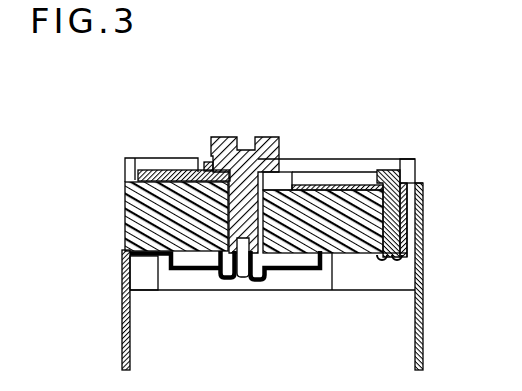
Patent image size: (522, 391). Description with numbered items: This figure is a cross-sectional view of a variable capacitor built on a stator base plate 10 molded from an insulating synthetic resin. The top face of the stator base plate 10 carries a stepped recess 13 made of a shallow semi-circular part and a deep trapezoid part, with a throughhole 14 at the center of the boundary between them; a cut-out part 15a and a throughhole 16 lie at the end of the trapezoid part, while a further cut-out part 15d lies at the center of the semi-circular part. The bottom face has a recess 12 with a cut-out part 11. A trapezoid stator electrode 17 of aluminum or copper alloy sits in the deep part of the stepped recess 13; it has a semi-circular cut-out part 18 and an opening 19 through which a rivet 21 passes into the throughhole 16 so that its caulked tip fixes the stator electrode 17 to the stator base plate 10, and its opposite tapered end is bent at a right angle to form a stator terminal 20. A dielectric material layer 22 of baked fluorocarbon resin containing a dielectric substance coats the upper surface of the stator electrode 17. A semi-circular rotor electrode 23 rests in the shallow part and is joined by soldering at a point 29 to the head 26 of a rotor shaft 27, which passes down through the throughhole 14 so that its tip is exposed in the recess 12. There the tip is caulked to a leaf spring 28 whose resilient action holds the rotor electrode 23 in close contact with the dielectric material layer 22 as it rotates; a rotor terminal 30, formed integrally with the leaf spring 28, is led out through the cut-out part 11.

The stator base plate 10 is at (130, 196).
The cut-out part 11 is at (147, 286).
The recess 12 is at (315, 284).
The stepped recess 13 is at (335, 185).
The throughhole 14 is at (204, 280).
The cut-out part 15a is at (417, 160).
The cut-out part 15d is at (124, 160).
The throughhole 16 is at (402, 246).
The stator electrode 17 is at (352, 285).
The cut-out part of stator electrode 18 is at (298, 183).
The opening 19 is at (423, 191).
The stator terminal 20 is at (423, 340).
The rivet 21 is at (407, 212).
The dielectric material layer 22 is at (352, 188).
The rotor electrode 23 is at (160, 170).
The head 26 is at (224, 140).
The rotor shaft 27 is at (250, 283).
The leaf spring 28 is at (183, 286).
The soldering point 29 is at (207, 162).
The rotor terminal 30 is at (122, 320).